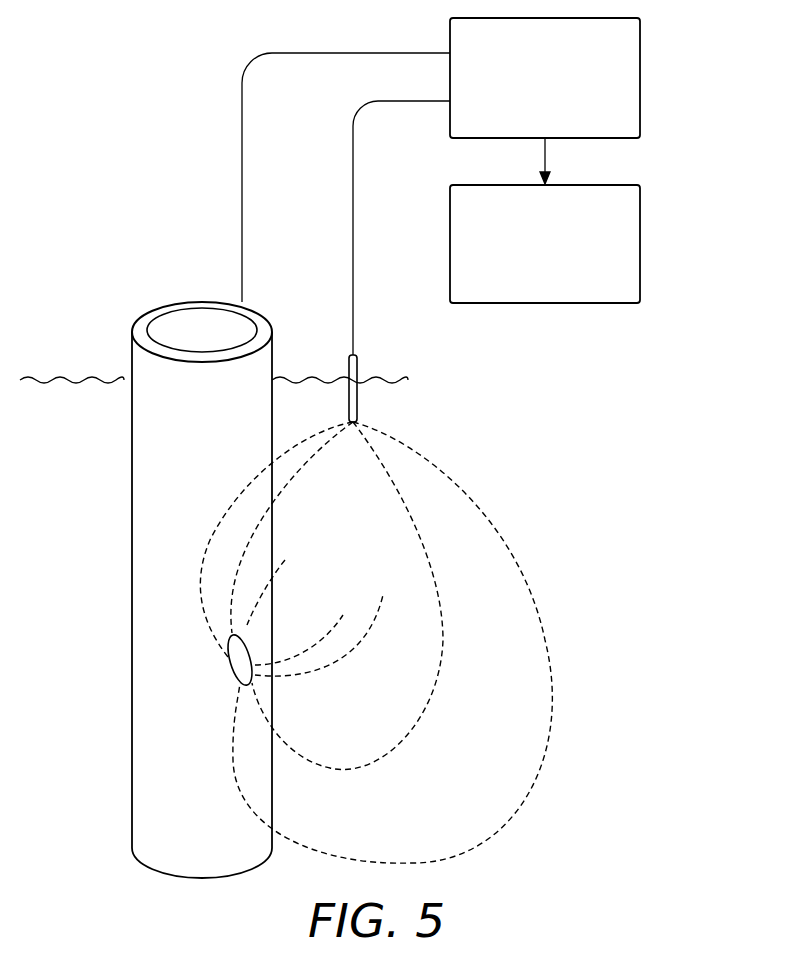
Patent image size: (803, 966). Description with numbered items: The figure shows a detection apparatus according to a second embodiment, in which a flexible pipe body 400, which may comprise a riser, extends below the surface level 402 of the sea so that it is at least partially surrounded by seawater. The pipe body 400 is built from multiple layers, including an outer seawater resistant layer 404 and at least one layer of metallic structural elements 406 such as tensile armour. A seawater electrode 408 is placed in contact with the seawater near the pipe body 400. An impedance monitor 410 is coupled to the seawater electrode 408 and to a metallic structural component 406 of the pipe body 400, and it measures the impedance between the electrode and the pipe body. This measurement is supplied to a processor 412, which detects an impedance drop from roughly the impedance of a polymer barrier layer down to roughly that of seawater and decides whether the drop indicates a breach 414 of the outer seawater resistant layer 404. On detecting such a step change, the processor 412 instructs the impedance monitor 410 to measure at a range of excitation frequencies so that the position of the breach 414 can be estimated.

The flexible pipe body 400 is at (143, 815).
The surface level 402 is at (66, 378).
The outer seawater resistant layer 404 is at (145, 313).
The layer of metallic structural elements 406 is at (172, 312).
The seawater electrode 408 is at (360, 360).
The impedance monitor 410 is at (640, 22).
The processor 412 is at (640, 190).
The breach 414 is at (233, 665).